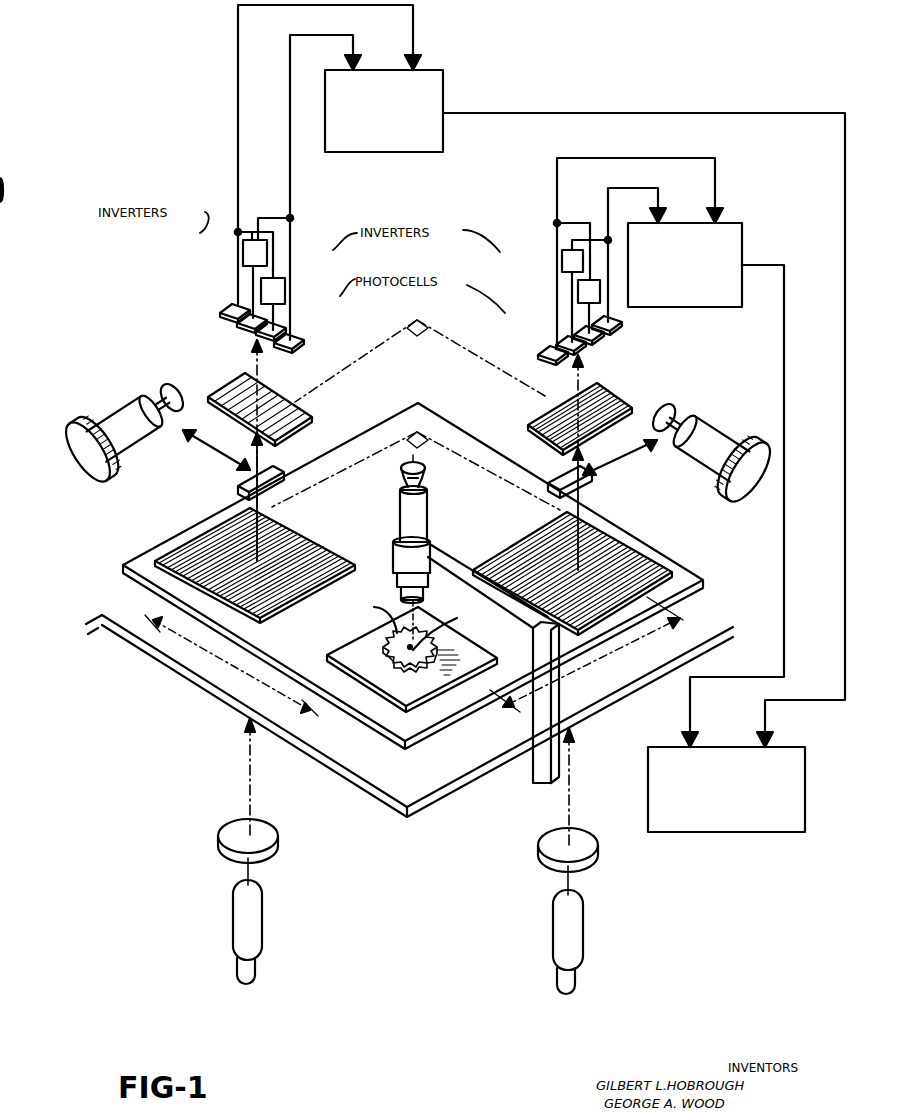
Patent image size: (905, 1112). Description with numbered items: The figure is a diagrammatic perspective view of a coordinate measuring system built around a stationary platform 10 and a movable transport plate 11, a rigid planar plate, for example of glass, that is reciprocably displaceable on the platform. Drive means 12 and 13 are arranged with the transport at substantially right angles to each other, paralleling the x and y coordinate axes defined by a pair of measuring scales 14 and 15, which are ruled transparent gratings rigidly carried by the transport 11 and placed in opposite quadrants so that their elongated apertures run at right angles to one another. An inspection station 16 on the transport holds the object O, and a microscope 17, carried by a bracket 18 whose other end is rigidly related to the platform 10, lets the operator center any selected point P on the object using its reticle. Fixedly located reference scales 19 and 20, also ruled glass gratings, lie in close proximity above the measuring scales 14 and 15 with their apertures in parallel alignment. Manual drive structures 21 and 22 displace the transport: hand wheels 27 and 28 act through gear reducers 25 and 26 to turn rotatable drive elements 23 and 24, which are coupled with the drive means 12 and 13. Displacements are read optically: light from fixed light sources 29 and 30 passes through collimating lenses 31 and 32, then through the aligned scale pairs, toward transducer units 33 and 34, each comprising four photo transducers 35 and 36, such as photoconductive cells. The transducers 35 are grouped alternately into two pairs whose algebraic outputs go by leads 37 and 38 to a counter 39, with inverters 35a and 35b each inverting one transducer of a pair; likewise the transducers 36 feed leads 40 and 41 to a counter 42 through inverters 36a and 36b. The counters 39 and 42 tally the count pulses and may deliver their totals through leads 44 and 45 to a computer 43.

The stationary platform 10 is at (205, 681).
The transport plate 11 is at (417, 402).
The drive means 12 is at (592, 491).
The drive means 13 is at (240, 490).
The measuring scale 14 is at (674, 557).
The measuring scale 15 is at (190, 539).
The inspection station 16 is at (386, 703).
The microscope 17 is at (430, 520).
The bracket 18 is at (537, 770).
The reference scale 19 is at (606, 390).
The reference scale 20 is at (304, 406).
The manual drive structure 21 is at (713, 418).
The manual drive structure 22 is at (129, 400).
The rotatable drive element 23 is at (700, 389).
The rotatable drive element 24 is at (171, 397).
The gear reducer 25 is at (725, 436).
The gear reducer 26 is at (132, 423).
The hand wheel 27 is at (730, 493).
The hand wheel 28 is at (82, 472).
The light source 29 is at (553, 924).
The light source 30 is at (262, 942).
The collimating lens 31 is at (539, 851).
The collimating lens 32 is at (278, 845).
The transducer unit 33 is at (543, 340).
The transducer unit 34 is at (297, 318).
The photo transducers 35 is at (613, 328).
The inverter 35a is at (578, 291).
The inverter 35b is at (562, 259).
The photo transducers 36 is at (304, 344).
The inverter 36a is at (243, 253).
The inverter 36b is at (278, 286).
The lead 37 is at (690, 158).
The lead 38 is at (608, 189).
The counter 39 is at (742, 226).
The lead 40 is at (292, 216).
The lead 41 is at (237, 181).
The counter 42 is at (441, 153).
The computer 43 is at (752, 832).
The lead 44 is at (784, 557).
The lead 45 is at (845, 601).